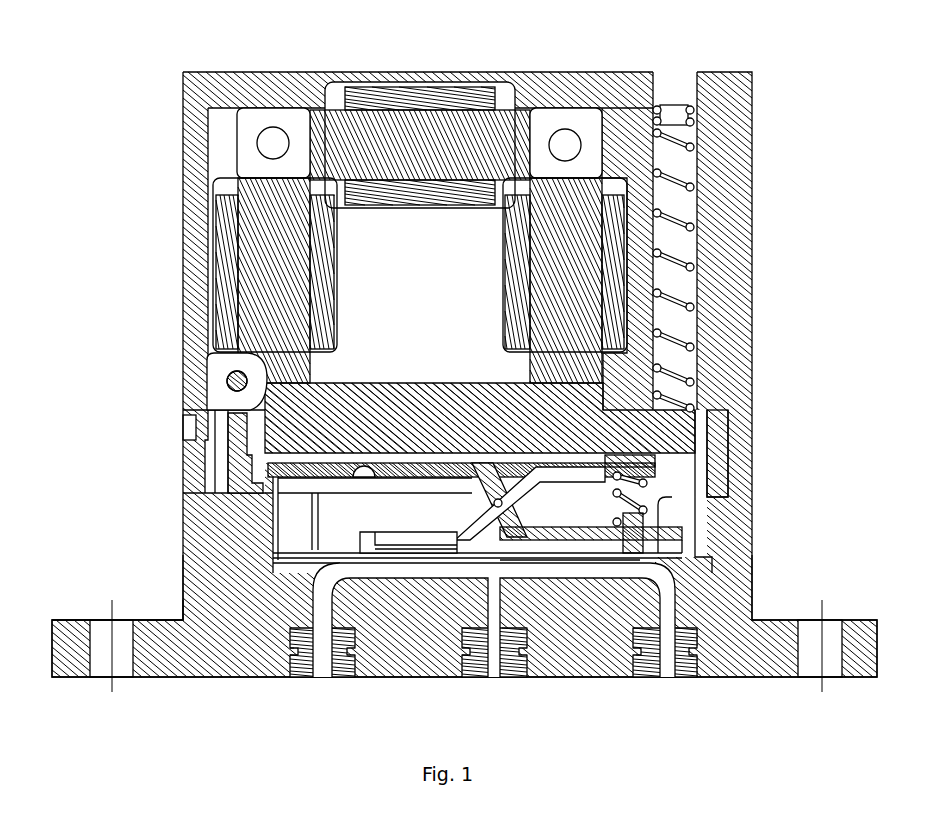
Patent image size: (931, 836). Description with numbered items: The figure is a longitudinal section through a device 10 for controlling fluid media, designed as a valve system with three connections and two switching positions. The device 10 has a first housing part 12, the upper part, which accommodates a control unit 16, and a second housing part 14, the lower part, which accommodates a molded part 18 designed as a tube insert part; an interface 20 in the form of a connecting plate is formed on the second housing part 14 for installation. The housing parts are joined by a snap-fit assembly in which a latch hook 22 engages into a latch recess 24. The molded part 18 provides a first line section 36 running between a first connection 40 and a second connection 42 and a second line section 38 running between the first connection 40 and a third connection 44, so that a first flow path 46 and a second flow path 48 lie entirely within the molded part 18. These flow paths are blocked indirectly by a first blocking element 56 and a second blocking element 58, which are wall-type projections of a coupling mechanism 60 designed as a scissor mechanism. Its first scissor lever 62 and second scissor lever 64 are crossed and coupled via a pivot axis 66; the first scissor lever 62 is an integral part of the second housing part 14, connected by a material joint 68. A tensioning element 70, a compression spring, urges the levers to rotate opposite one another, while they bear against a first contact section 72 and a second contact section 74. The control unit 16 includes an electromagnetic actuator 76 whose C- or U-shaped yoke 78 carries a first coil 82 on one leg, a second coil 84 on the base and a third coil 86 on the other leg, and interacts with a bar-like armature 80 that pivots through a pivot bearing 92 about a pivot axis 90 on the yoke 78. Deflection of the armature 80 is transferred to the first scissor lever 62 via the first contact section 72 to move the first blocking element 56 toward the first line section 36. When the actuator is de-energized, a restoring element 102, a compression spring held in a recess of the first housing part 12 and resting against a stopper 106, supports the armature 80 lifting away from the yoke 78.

The device 10 is at (776, 138).
The first housing part 12 is at (178, 128).
The second housing part 14 is at (160, 605).
The control unit 16 is at (470, 197).
The molded part 18 is at (300, 680).
The interface 20 is at (245, 682).
The latch hook 22 is at (213, 412).
The latch recess 24 is at (196, 430).
The first line section 36 is at (640, 556).
The second line section 38 is at (335, 556).
The first connection 40 is at (494, 645).
The second connection 42 is at (668, 670).
The third connection 44 is at (322, 668).
The first flow path 46 is at (540, 565).
The second flow path 48 is at (433, 575).
The first blocking element 56 is at (643, 540).
The second blocking element 58 is at (360, 542).
The coupling mechanism 60 is at (330, 512).
The first scissor lever 62 is at (600, 542).
The second scissor lever 64 is at (422, 547).
The pivot axis 66 is at (496, 499).
The material joint 68 is at (364, 465).
The tensioning element 70 is at (622, 508).
The first contact section 72 is at (700, 520).
The second contact section 74 is at (652, 458).
The actuator 76 is at (472, 82).
The yoke 78 is at (295, 125).
The armature 80 is at (410, 378).
The first coil 82 is at (222, 215).
The second coil 84 is at (390, 90).
The third coil 86 is at (620, 260).
The pivot axis 90 is at (230, 376).
The pivot bearing 92 is at (237, 381).
The restoring element 102 is at (690, 175).
The stopper 106 is at (672, 110).